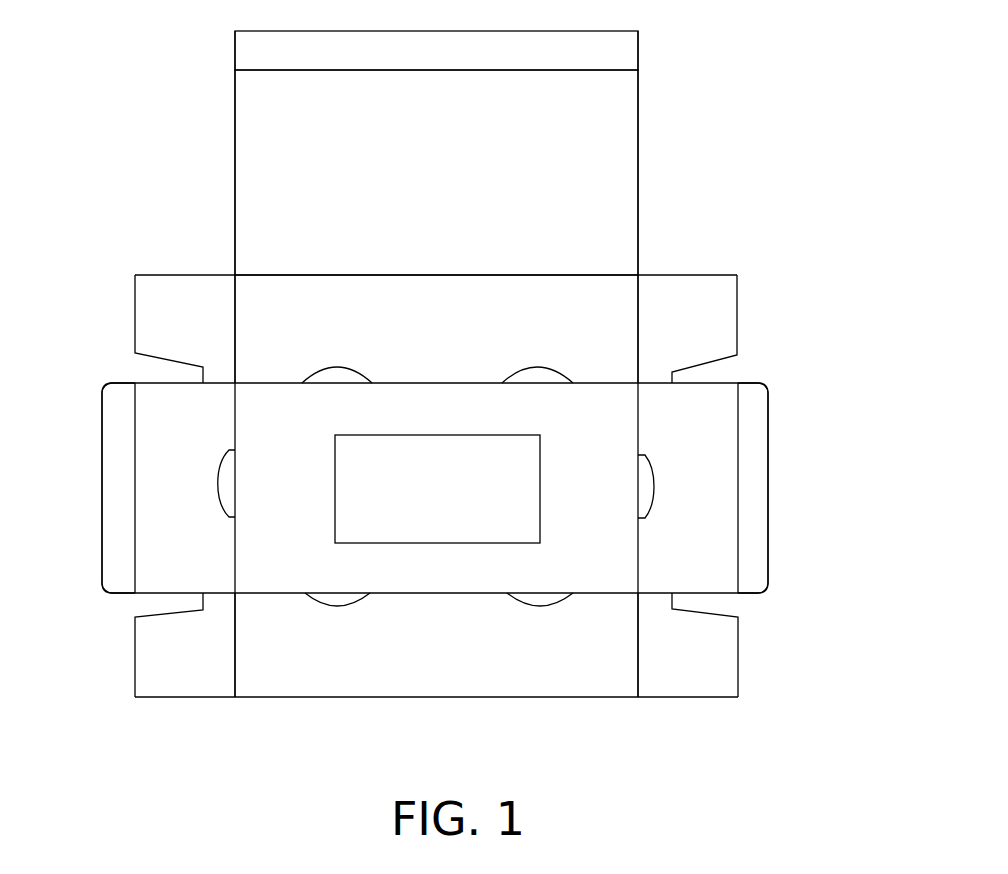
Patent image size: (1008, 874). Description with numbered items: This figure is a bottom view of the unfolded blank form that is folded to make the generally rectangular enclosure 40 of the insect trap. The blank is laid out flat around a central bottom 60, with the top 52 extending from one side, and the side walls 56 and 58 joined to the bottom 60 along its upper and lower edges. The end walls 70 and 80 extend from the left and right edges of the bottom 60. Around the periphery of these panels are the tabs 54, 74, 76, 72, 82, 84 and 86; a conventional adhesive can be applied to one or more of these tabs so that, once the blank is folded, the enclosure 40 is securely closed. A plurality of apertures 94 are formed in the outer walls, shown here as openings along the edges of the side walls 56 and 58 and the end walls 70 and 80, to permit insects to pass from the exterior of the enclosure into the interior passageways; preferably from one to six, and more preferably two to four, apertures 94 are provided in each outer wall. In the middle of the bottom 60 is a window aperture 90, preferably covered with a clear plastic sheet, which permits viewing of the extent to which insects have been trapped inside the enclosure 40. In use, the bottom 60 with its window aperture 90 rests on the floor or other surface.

The enclosure 40 is at (820, 178).
The top 52 is at (607, 145).
The tab 54 is at (625, 50).
The side wall 56 is at (613, 317).
The side wall 58 is at (490, 682).
The bottom 60 is at (622, 538).
The end wall 70 is at (715, 420).
The tab 72 is at (722, 677).
The tab 74 is at (720, 318).
The tab 76 is at (757, 487).
The end wall 80 is at (148, 415).
The tab 82 is at (185, 677).
The tab 84 is at (160, 300).
The tab 86 is at (113, 568).
The window aperture 90 is at (414, 496).
The apertures 94 is at (362, 364).